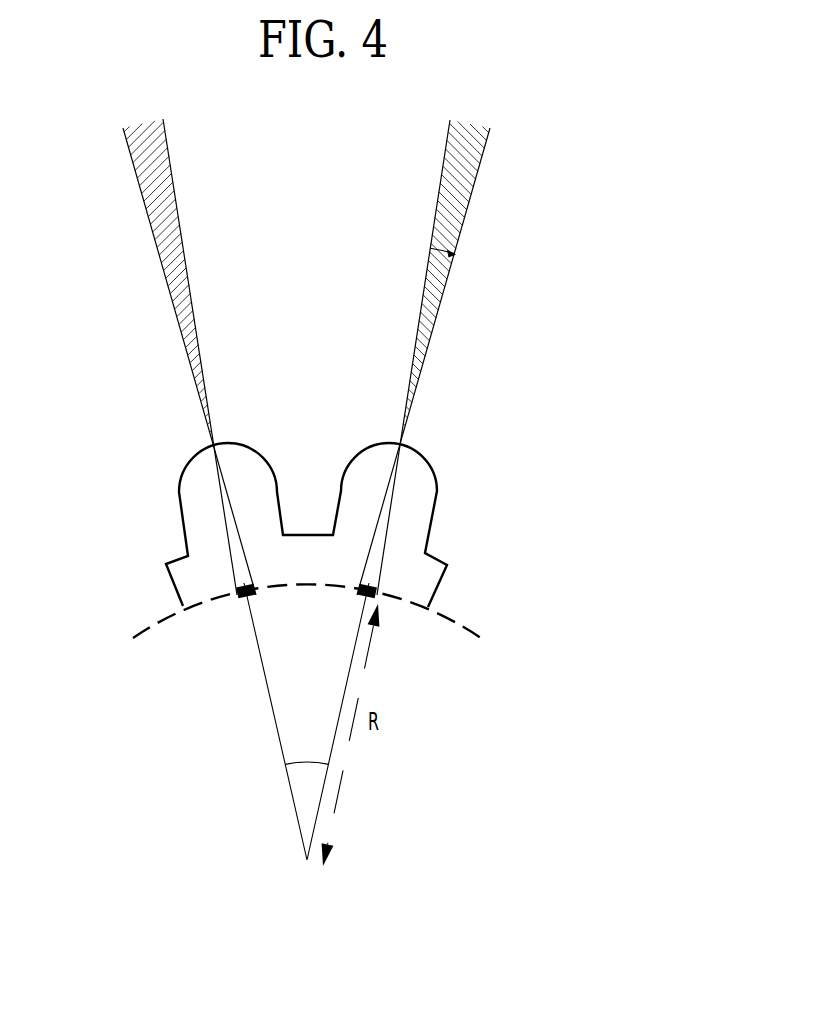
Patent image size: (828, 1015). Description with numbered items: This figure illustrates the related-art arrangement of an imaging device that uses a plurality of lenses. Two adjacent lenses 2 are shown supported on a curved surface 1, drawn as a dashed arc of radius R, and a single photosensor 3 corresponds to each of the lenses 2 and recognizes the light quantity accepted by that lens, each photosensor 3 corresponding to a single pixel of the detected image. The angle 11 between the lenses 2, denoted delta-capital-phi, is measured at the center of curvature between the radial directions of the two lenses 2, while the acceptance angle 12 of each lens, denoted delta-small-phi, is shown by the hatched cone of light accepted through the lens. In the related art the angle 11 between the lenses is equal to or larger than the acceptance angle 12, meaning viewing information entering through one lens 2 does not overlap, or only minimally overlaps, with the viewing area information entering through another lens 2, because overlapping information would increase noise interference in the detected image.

The curved surface 1 is at (155, 620).
The lenses 2 is at (188, 490).
The photosensor 3 is at (236, 600).
The angle between the lenses 11 is at (300, 762).
The acceptance angle 12 is at (445, 247).